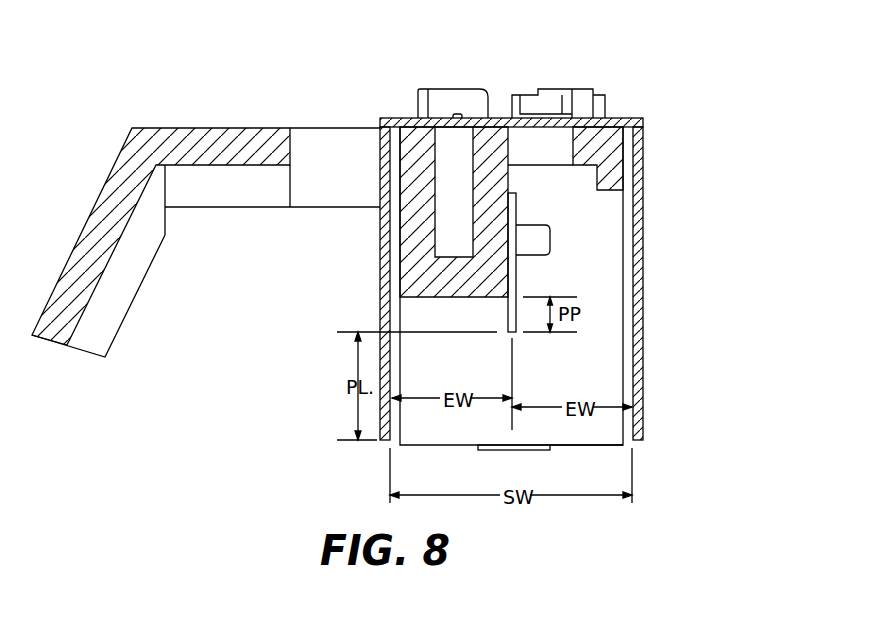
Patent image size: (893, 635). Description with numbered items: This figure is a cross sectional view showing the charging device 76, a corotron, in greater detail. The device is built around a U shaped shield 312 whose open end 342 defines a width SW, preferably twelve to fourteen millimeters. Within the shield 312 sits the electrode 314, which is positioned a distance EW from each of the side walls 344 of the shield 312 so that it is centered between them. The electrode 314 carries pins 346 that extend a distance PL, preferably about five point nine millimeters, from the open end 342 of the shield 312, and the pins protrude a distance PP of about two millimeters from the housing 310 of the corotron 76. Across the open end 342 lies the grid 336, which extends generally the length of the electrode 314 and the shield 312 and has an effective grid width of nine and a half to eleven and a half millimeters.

The charging device 76 is at (645, 55).
The housing 310 is at (233, 126).
The shield 312 is at (643, 268).
The electrode 314 is at (522, 278).
The grid 336 is at (483, 452).
The open end 342 is at (588, 458).
The side walls 344 is at (380, 222).
The pins 346 is at (517, 333).